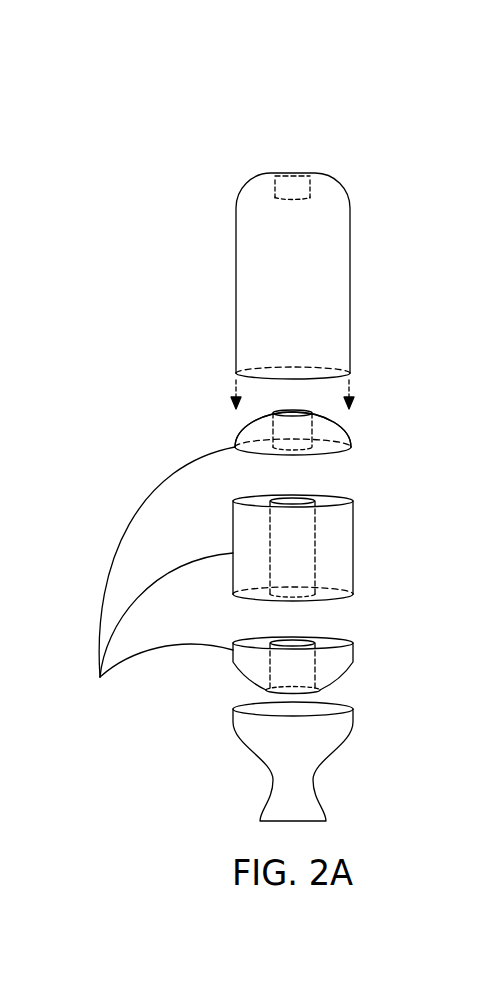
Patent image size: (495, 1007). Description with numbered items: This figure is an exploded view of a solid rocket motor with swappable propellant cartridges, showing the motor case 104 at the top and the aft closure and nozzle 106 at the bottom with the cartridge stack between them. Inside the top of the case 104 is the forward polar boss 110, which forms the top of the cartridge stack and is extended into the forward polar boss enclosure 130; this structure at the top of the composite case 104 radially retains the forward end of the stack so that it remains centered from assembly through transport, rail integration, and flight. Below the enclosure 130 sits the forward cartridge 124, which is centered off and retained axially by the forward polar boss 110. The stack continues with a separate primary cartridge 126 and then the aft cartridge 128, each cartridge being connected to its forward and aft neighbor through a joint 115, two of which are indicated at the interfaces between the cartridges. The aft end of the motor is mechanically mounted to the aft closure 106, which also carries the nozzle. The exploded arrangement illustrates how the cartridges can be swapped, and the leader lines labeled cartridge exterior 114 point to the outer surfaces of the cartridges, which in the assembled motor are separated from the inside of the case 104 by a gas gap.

The composite case 104 is at (240, 197).
The forward polar boss 110 is at (302, 188).
The forward polar boss enclosure 130 is at (303, 427).
The forward cartridge 124 is at (355, 442).
The joint 115 is at (307, 482).
The primary cartridge 126 is at (355, 531).
The aft cartridge 128 is at (355, 650).
The aft closure and nozzle 106 is at (337, 743).
The cartridge exterior 114 is at (158, 579).